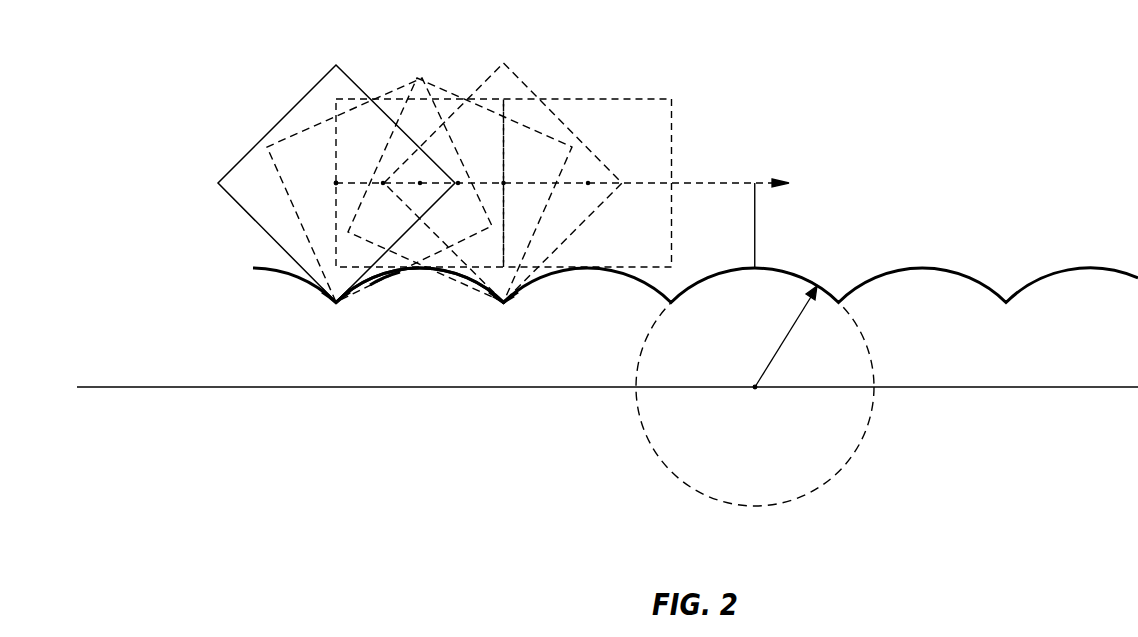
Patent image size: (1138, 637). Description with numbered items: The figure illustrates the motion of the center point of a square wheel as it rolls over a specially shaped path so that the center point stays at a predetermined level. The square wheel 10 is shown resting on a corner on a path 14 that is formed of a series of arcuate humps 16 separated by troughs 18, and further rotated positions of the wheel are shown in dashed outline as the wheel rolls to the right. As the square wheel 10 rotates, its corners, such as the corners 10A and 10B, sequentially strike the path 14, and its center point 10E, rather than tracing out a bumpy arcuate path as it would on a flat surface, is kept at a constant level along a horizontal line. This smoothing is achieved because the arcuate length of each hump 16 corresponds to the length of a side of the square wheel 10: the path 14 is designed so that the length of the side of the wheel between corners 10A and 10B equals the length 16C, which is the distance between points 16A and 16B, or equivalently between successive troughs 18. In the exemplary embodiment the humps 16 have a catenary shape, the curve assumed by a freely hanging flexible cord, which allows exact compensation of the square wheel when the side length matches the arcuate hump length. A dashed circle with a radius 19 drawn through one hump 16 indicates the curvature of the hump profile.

The square wheel 10 is at (303, 70).
The corner 10A is at (333, 300).
The corner 10B is at (458, 182).
The center point 10E is at (334, 182).
The path 14 is at (927, 266).
The arcuate hump 16 is at (443, 273).
The point 16A is at (335, 304).
The point 16B is at (503, 305).
The length 16C is at (385, 276).
The trough 18 is at (504, 304).
The radius of arc segment 19 is at (781, 349).